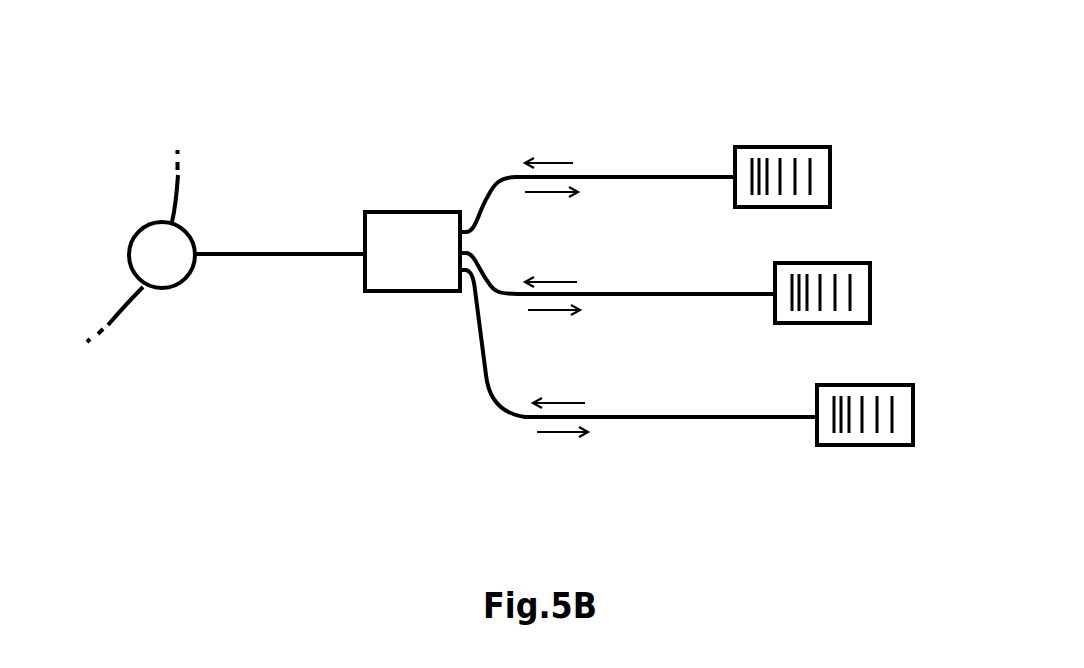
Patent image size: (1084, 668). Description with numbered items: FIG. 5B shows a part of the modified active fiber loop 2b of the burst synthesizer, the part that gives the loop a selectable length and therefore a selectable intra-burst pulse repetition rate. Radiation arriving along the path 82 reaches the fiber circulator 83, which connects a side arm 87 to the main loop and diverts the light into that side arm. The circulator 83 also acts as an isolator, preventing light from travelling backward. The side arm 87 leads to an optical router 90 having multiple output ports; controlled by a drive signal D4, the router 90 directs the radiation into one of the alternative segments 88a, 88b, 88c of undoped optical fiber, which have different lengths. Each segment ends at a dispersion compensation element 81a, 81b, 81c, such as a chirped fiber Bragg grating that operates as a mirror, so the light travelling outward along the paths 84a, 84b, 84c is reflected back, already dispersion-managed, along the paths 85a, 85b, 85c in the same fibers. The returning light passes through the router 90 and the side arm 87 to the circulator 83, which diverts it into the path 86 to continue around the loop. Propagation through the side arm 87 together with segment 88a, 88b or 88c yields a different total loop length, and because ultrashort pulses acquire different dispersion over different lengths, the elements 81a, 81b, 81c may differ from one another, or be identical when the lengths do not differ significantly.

The modified active fiber loop 2b is at (104, 108).
The dispersion compensation element 81a is at (813, 145).
The dispersion compensation element 81b is at (853, 262).
The dispersion compensation element 81c is at (897, 385).
The path 82 is at (118, 290).
The fiber circulator 83 is at (177, 270).
The path 84a is at (551, 204).
The path 84b is at (554, 322).
The path 84c is at (562, 444).
The path 85a is at (549, 154).
The path 85b is at (551, 272).
The path 85c is at (559, 394).
The path 86 is at (160, 165).
The side arm 87 is at (222, 252).
The segment of undoped optical fiber 88a is at (657, 175).
The segment of undoped optical fiber 88b is at (695, 292).
The segment of undoped optical fiber 88c is at (745, 415).
The optical router 90 is at (427, 267).
The drive signal D4 is at (410, 198).